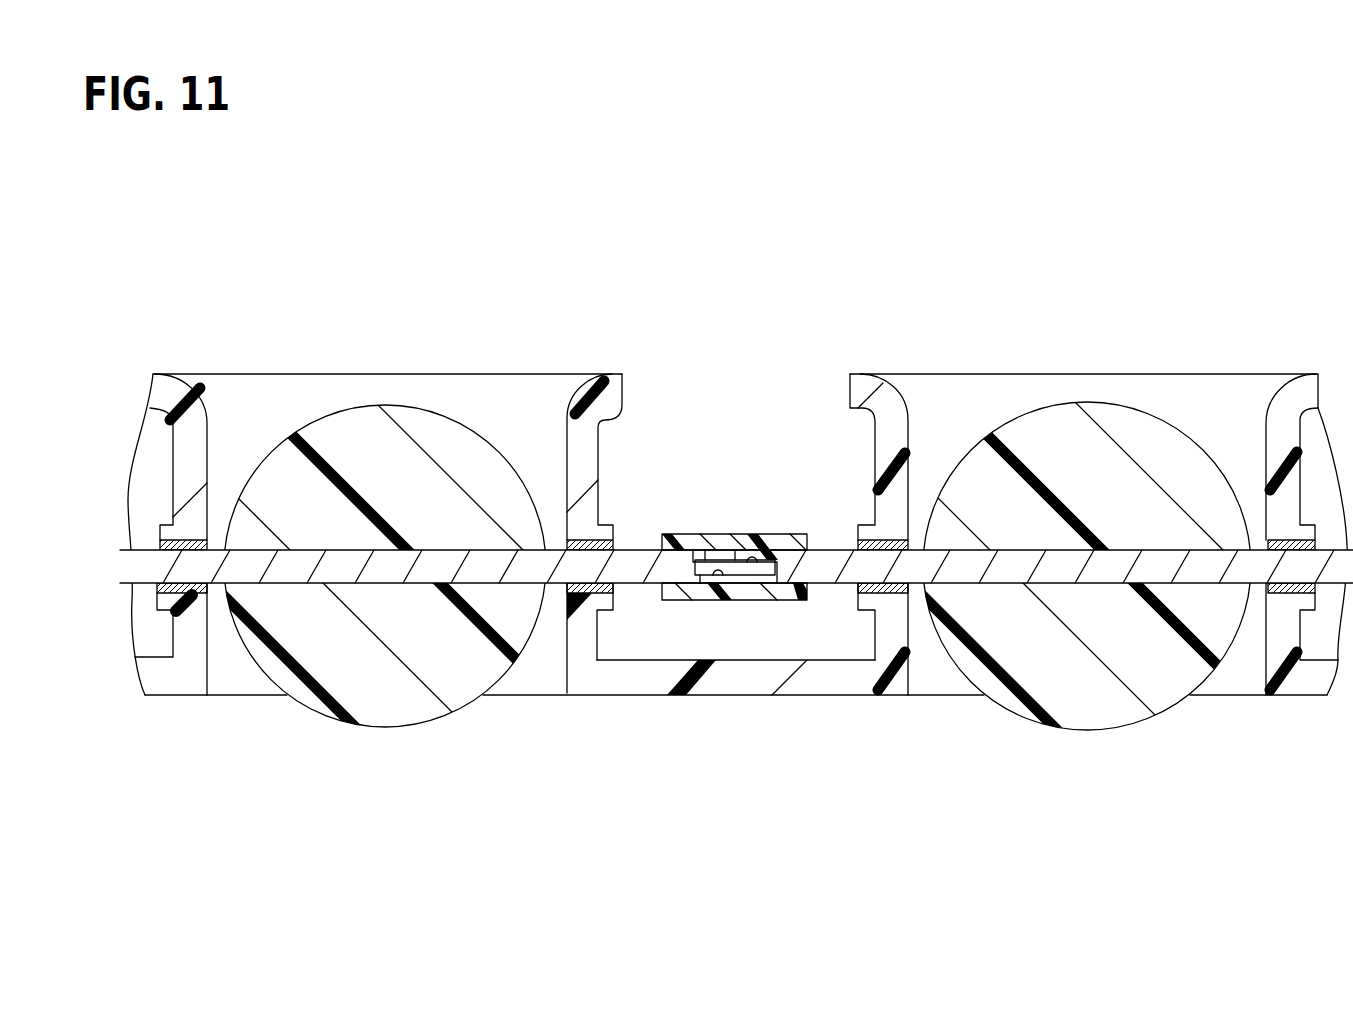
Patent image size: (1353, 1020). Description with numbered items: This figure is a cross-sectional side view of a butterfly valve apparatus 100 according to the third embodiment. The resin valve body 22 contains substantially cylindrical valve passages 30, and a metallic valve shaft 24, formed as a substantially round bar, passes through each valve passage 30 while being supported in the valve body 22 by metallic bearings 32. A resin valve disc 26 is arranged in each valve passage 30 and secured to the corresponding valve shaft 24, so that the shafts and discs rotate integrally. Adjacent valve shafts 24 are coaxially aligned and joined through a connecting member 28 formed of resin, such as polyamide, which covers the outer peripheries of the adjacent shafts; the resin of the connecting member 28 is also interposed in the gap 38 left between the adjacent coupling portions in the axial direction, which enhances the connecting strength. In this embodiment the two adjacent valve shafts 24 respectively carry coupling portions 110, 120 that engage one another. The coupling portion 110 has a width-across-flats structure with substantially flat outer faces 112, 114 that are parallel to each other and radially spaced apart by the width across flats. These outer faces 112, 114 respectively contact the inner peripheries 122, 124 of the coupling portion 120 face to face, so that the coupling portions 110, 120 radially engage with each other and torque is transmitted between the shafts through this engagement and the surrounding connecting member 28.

The butterfly valve apparatus 100 is at (730, 590).
The valve body 22 is at (638, 392).
The valve shaft 24 is at (488, 565).
The valve disc 26 is at (416, 430).
The connecting member 28 is at (797, 600).
The valve passage 30 is at (258, 410).
The bearing 32 is at (204, 593).
The gap 38 is at (698, 536).
The coupling portion 110 is at (737, 600).
The outer face 112 is at (708, 600).
The outer face 114 is at (760, 536).
The coupling portion 120 is at (744, 536).
The inner periphery 122 is at (745, 600).
The inner periphery 124 is at (718, 536).